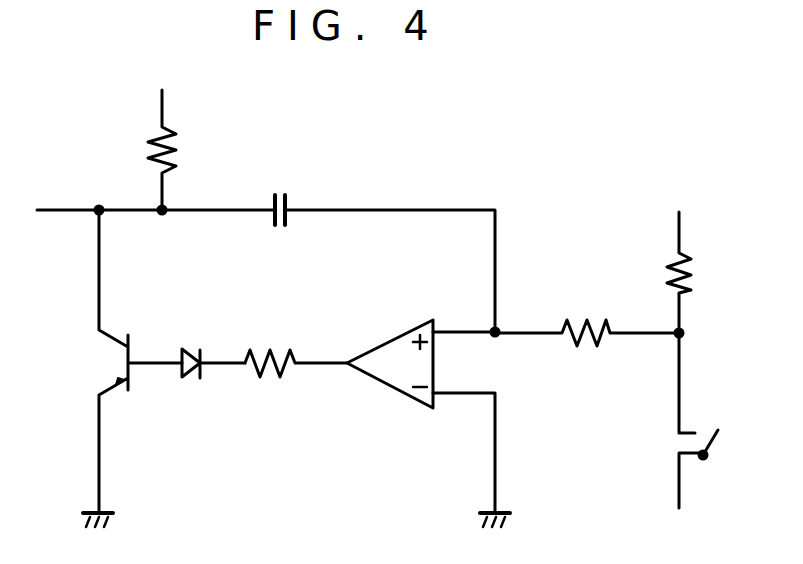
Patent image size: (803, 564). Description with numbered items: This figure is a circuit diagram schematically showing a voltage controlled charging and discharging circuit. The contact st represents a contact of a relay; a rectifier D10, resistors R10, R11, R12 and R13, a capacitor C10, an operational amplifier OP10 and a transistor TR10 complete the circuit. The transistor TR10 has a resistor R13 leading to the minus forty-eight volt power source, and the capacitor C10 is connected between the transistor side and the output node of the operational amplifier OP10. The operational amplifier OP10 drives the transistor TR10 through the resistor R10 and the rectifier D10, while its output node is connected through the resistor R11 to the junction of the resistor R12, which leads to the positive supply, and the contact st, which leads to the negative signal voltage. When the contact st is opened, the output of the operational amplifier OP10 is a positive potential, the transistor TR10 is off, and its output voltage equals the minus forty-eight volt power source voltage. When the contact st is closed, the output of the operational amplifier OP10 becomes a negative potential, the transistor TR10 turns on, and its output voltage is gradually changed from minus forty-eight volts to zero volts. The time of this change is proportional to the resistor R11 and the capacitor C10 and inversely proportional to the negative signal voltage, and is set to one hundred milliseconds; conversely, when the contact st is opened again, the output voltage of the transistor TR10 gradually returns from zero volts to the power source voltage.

The resistor R13 is at (134, 150).
The capacitor C10 is at (287, 184).
The transistor TR10 is at (112, 361).
The rectifier D10 is at (206, 337).
The resistor R10 is at (296, 337).
The operational amplifier OP10 is at (421, 398).
The resistor R11 is at (587, 314).
The resistor R12 is at (712, 272).
The contact of a relay st is at (698, 420).